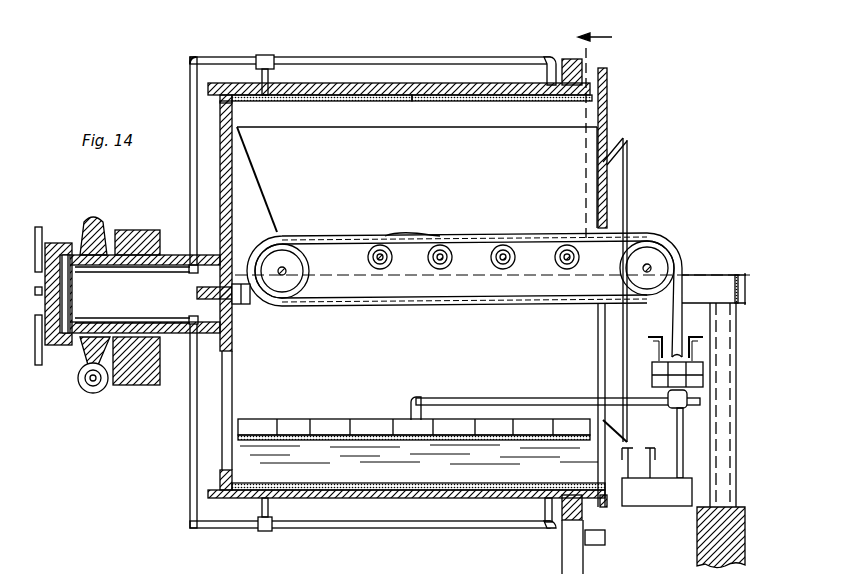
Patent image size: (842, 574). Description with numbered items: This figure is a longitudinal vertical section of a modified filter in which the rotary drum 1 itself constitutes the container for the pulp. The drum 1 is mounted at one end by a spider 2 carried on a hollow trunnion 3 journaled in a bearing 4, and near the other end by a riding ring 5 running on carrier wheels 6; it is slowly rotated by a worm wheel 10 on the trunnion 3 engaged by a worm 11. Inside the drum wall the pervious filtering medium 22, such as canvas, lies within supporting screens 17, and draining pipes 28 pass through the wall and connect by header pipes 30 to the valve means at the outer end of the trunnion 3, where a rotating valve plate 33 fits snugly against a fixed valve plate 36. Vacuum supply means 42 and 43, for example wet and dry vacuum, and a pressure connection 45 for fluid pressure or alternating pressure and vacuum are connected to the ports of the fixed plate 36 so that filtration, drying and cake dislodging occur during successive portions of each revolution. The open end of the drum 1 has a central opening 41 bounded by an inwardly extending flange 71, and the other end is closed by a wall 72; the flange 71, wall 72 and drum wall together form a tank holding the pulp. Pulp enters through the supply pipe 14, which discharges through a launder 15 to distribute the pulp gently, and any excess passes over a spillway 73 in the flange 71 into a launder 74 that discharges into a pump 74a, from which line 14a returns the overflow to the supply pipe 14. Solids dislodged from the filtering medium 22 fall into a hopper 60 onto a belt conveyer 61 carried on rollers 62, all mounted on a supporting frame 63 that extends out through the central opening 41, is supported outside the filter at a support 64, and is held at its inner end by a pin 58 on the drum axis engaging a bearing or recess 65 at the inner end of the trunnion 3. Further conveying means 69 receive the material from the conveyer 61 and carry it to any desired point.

The rotary drum 1 is at (384, 93).
The spider 2 is at (221, 181).
The hollow shaft or trunnion 3 is at (176, 254).
The bearing means 4 is at (135, 232).
The riding ring 5 is at (584, 512).
The carrying rolls 6 is at (580, 553).
The worm wheel 10 is at (80, 228).
The worm 11 is at (90, 393).
The supply pipe 14 is at (423, 398).
The return line 14a is at (684, 437).
The launder 15 is at (346, 425).
The supporting screens 17 is at (327, 99).
The filtering medium 22 is at (388, 99).
The draining pipes 28 is at (270, 78).
The header pipes 30 is at (190, 180).
The valve plate 33 is at (72, 286).
The fixed valve plate 36 is at (66, 320).
The central opening 41 is at (612, 284).
The vacuum supply means 42 is at (37, 352).
The vacuum supply means 43 is at (35, 291).
The pressure connection 45 is at (42, 230).
The pin 58 is at (197, 291).
The hopper 60 is at (417, 179).
The belt conveyer 61 is at (324, 248).
The rollers 62 is at (310, 280).
The supporting frame means 63 is at (288, 306).
The outside support 64 is at (735, 398).
The bearing or recess 65 is at (234, 304).
The conveying means 69 is at (656, 376).
The inwardly extending flange 71 is at (598, 466).
The end wall 72 is at (233, 381).
The overflow cone or spillway 73 is at (624, 427).
The launder 74 is at (641, 463).
The pump 74a is at (652, 507).